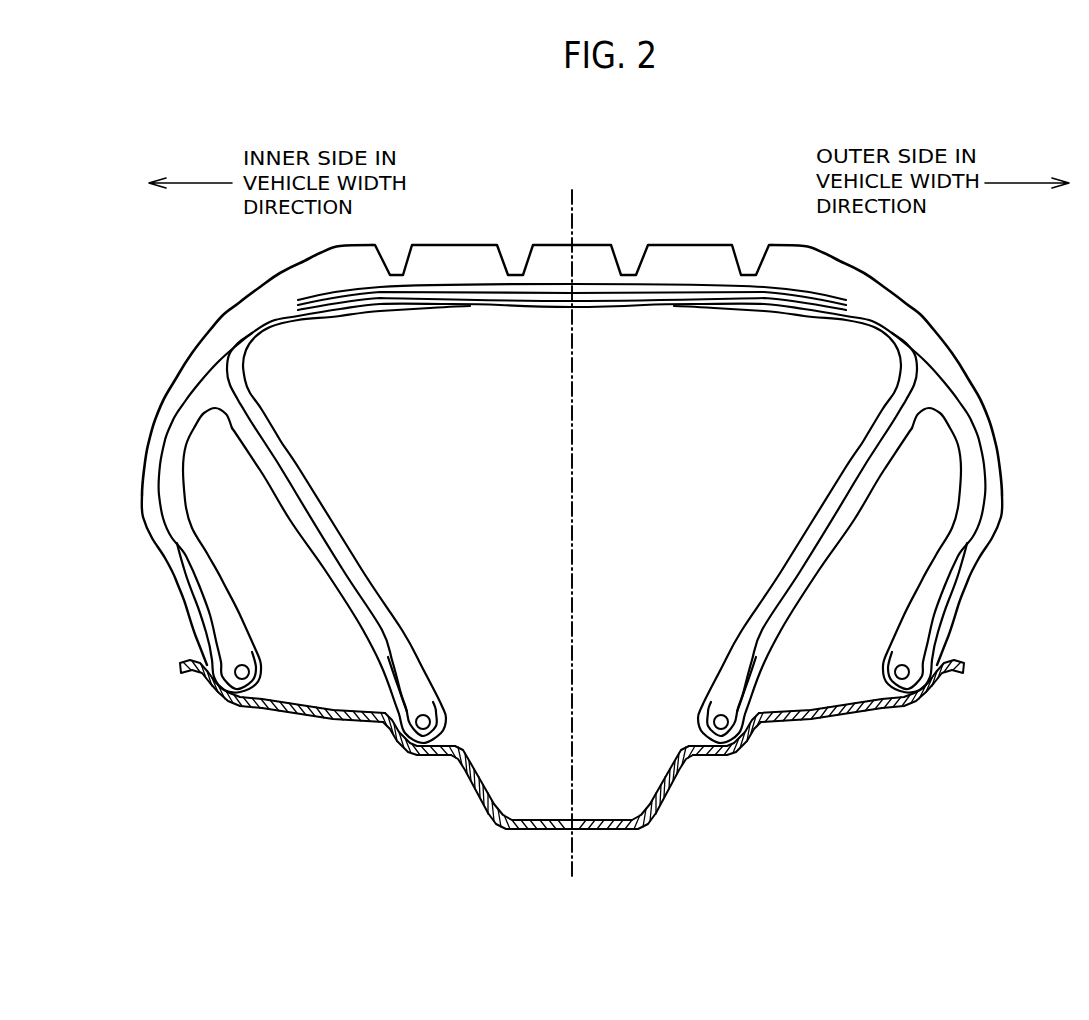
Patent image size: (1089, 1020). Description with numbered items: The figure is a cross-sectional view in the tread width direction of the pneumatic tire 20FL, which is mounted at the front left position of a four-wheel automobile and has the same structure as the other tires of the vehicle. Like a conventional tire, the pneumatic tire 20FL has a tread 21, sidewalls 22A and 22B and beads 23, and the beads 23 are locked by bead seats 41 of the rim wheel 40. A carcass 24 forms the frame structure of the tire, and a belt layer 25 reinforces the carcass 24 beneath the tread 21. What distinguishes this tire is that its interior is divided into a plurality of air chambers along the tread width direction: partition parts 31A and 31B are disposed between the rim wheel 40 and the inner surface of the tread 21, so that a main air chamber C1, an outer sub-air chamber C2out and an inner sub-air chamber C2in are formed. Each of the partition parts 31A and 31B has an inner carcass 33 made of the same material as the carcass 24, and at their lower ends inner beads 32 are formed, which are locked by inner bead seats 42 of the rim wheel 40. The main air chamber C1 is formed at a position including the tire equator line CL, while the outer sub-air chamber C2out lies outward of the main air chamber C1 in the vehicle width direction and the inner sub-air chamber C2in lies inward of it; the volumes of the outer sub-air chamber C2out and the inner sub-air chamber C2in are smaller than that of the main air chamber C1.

The pneumatic tire 20FL is at (769, 189).
The tread 21 is at (689, 244).
The sidewall 22A is at (996, 412).
The sidewall 22B is at (146, 449).
The bead 23 is at (193, 632).
The carcass 24 is at (162, 494).
The belt layer 25 is at (463, 285).
The partition part 31A is at (817, 508).
The partition part 31B is at (331, 513).
The inner bead 32 is at (447, 721).
The inner carcass 33 is at (347, 570).
The rim wheel 40 is at (815, 714).
The bead seat 41 is at (254, 710).
The inner bead seat 42 is at (447, 740).
The tire equator line CL is at (571, 225).
The main air chamber C1 is at (633, 463).
The inner sub-air chamber C2in is at (303, 601).
The outer sub-air chamber C2out is at (898, 601).